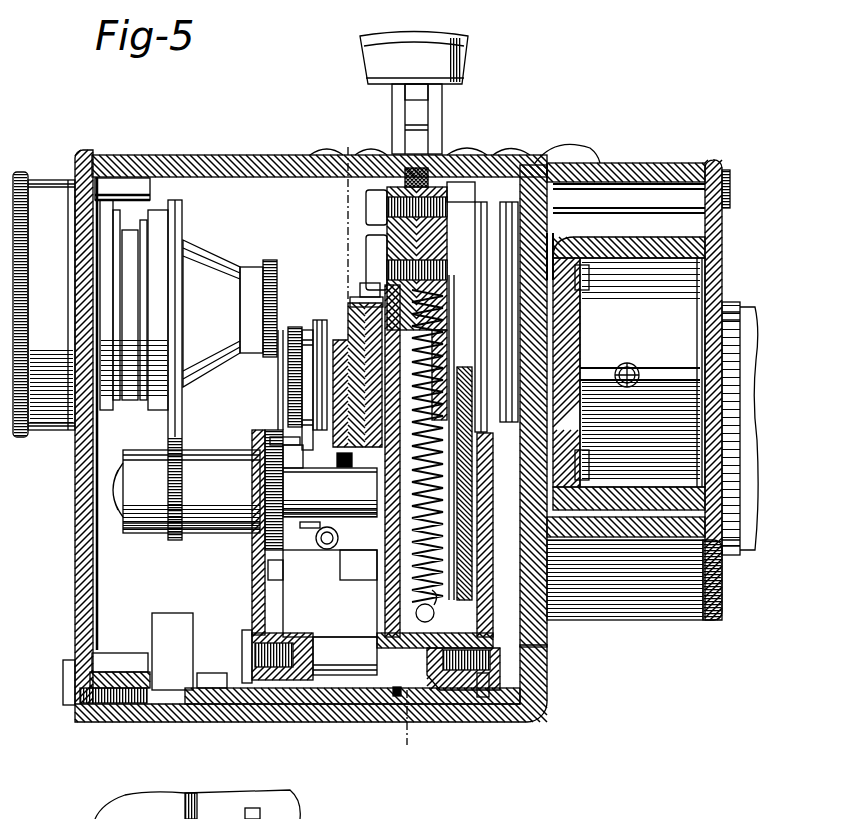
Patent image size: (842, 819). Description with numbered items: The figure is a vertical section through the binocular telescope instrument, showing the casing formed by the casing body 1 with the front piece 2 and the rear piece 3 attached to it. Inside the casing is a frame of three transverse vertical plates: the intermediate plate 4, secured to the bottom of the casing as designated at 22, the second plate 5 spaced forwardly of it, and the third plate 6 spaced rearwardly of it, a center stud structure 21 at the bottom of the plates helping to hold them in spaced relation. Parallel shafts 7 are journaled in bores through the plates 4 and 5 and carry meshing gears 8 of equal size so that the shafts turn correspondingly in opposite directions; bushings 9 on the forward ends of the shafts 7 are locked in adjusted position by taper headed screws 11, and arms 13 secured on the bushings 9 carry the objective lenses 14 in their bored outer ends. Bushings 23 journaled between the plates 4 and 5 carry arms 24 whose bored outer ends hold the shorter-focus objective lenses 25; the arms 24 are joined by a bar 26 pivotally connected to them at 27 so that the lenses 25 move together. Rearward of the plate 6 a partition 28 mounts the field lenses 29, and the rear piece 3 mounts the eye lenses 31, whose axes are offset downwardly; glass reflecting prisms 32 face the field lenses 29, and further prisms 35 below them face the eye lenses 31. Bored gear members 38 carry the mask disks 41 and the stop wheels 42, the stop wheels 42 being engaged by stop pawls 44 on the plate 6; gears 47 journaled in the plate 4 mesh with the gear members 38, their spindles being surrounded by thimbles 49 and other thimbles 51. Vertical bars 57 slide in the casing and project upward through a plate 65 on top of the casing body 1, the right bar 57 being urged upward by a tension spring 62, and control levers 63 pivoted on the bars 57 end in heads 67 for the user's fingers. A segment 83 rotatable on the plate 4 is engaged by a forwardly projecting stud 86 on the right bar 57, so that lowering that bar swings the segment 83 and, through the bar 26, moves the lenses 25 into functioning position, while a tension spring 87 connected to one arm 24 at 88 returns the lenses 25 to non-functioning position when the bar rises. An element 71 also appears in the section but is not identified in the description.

The casing body 1 is at (155, 156).
The front piece 2 is at (78, 499).
The rear piece 3 is at (712, 160).
The intermediate transverse vertically disposed plate 4 is at (383, 602).
The second transverse vertically disposed plate 5 is at (250, 586).
The third transverse vertically disposed plate 6 is at (486, 598).
The shafts 7 is at (299, 483).
The meshing gears 8 is at (290, 443).
The bushings 9 is at (168, 449).
The taper headed screws 11 is at (108, 481).
The arms 13 is at (185, 250).
The objective lenses 14 is at (213, 265).
The center stud structure 21 is at (328, 640).
The securing point of plate to casing bottom 22 is at (212, 722).
The bushings 23 is at (283, 438).
The arms 24 is at (352, 333).
The objective lenses 25 is at (304, 331).
The bar 26 is at (321, 470).
The pivotal connection 27 is at (318, 389).
The partition 28 is at (551, 176).
The field lenses 29 is at (510, 216).
The eye lenses 31 is at (735, 302).
The glass reflecting prisms 32 is at (627, 262).
The glass reflecting prisms 35 is at (649, 386).
The gear members 38 is at (381, 463).
The mask disks 41 is at (448, 280).
The stop wheels 42 is at (466, 366).
The stop pawls 44 is at (456, 561).
The gears 47 is at (397, 697).
The thimbles 49 is at (368, 566).
The thimbles 51 is at (272, 569).
The vertical bars 57 is at (441, 107).
The tension spring 62 is at (444, 312).
The control levers 63 is at (413, 96).
The plate 65 is at (541, 185).
The heads 67 is at (470, 50).
The plate 71 is at (452, 184).
The segment 83 is at (366, 308).
The stud 86 is at (359, 298).
The tension spring 87 is at (338, 536).
The spring connection 88 is at (316, 535).